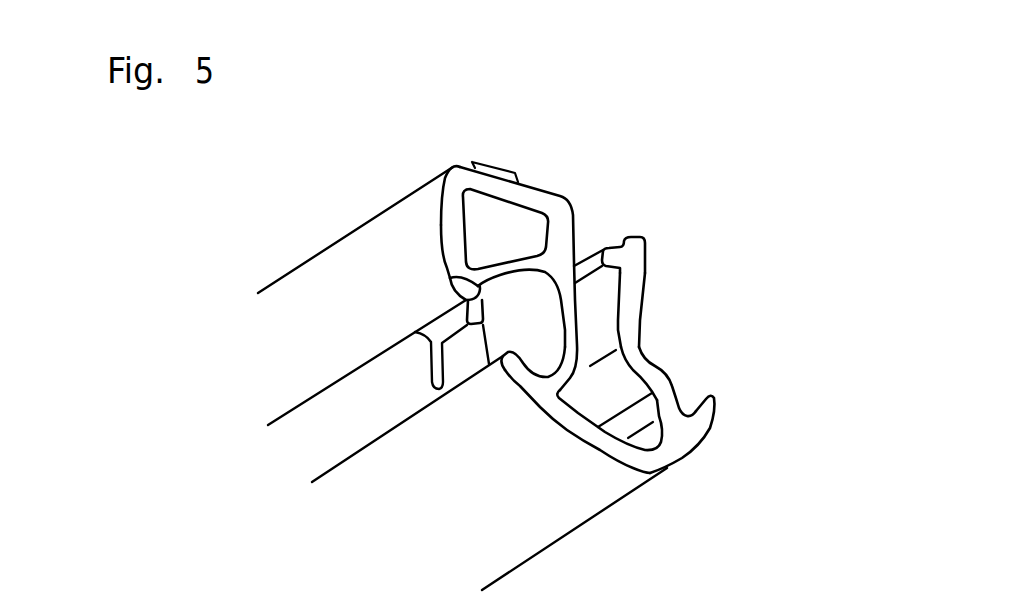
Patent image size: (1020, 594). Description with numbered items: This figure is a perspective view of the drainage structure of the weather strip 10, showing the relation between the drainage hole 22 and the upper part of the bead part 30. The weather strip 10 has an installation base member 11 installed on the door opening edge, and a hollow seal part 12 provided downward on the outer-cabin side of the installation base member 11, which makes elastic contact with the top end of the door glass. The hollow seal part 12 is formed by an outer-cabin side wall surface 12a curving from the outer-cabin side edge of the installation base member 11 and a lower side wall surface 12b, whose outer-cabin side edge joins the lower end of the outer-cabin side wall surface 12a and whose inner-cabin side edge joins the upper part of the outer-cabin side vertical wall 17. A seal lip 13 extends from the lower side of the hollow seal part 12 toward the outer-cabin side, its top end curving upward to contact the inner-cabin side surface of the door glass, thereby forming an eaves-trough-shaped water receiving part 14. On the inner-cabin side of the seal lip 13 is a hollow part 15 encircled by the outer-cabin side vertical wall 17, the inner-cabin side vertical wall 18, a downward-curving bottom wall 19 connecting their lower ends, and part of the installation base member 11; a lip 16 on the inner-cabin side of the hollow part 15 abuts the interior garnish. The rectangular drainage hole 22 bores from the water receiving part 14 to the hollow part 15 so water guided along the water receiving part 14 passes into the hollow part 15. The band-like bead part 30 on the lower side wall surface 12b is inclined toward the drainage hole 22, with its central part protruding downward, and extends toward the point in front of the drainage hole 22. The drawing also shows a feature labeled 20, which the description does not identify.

The weather strip 10 is at (763, 272).
The installation base member 11 is at (541, 190).
The hollow seal part 12 is at (440, 214).
The outer-cabin side wall surface 12a is at (441, 247).
The lower side wall surface 12b is at (502, 256).
The seal lip 13 is at (503, 370).
The water receiving part 14 is at (543, 363).
The hollow part 15 is at (615, 386).
The lip 16 is at (712, 404).
The outer-cabin side vertical wall 17 is at (643, 253).
The inner-cabin side vertical wall 18 is at (643, 290).
The bottom wall 19 is at (610, 460).
The projection 20 is at (495, 166).
The drainage hole 22 is at (467, 368).
The bead part 30 is at (451, 280).